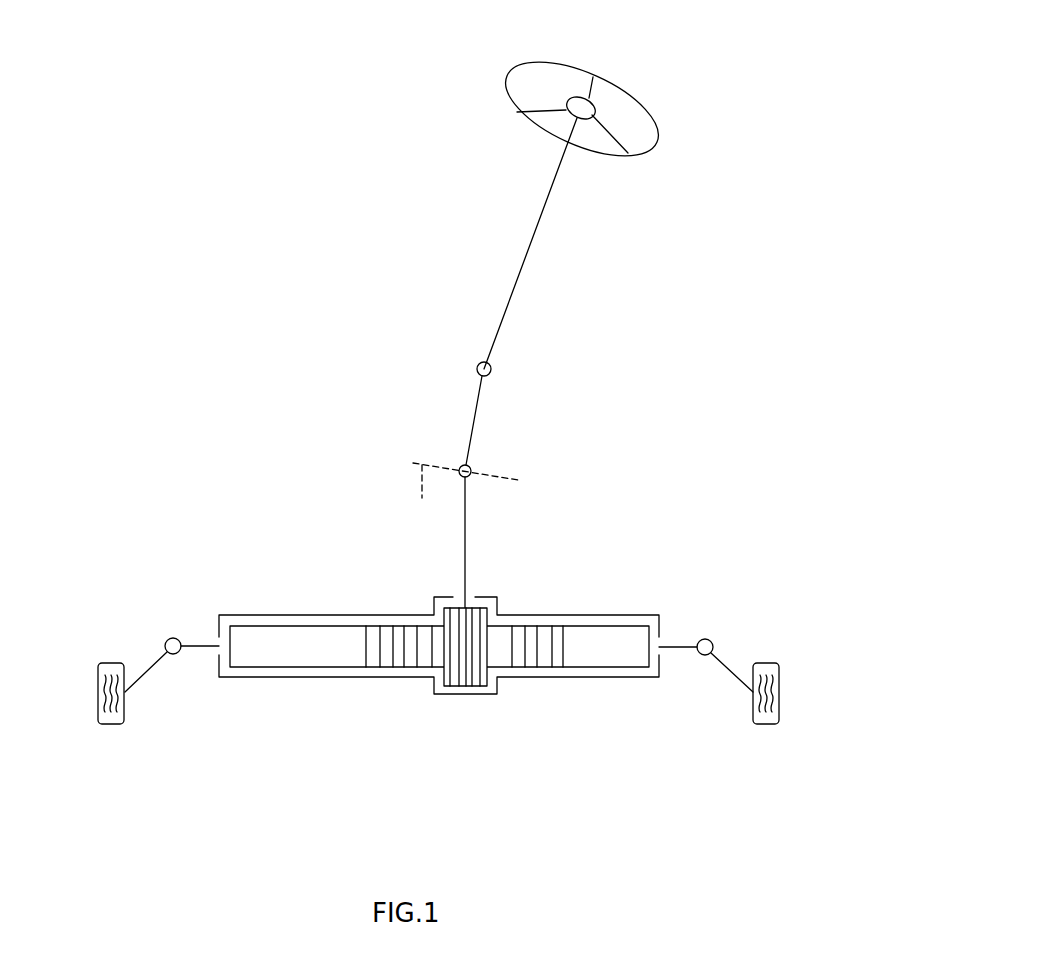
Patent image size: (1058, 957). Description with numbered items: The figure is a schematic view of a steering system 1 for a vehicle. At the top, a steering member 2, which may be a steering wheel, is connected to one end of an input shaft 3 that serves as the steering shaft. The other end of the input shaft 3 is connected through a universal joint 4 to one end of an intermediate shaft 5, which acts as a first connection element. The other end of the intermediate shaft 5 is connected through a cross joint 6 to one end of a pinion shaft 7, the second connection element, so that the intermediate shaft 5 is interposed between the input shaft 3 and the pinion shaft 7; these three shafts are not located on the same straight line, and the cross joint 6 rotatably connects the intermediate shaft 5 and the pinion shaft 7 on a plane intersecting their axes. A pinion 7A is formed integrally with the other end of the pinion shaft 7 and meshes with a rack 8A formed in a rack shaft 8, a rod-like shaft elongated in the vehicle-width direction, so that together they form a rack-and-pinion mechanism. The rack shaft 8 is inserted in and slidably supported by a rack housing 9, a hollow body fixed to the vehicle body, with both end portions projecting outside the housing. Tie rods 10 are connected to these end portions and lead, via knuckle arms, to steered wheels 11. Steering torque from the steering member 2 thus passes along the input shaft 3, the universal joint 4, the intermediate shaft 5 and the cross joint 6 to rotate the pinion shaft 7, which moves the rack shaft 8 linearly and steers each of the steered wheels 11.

The steering system 1 is at (676, 63).
The steering member 2 is at (574, 64).
The input shaft 3 is at (539, 218).
The universal joint 4 is at (492, 371).
The intermediate shaft 5 is at (473, 418).
The cross joint 6 is at (471, 466).
The pinion shaft 7 is at (468, 543).
The pinion 7A is at (474, 680).
The rack shaft 8 is at (530, 669).
The rack 8A is at (412, 660).
The rack housing 9 is at (355, 614).
The tie rods 10 is at (152, 668).
The steered wheels 11 is at (110, 727).